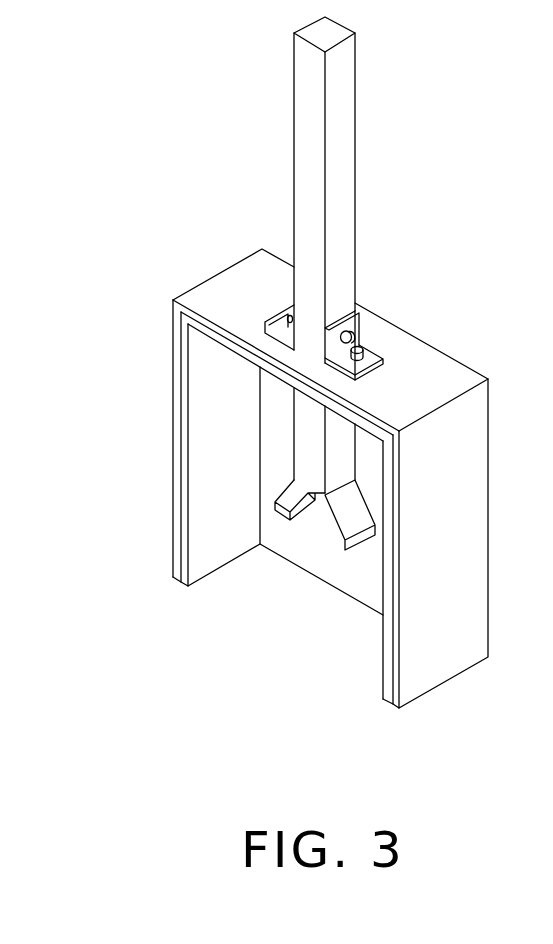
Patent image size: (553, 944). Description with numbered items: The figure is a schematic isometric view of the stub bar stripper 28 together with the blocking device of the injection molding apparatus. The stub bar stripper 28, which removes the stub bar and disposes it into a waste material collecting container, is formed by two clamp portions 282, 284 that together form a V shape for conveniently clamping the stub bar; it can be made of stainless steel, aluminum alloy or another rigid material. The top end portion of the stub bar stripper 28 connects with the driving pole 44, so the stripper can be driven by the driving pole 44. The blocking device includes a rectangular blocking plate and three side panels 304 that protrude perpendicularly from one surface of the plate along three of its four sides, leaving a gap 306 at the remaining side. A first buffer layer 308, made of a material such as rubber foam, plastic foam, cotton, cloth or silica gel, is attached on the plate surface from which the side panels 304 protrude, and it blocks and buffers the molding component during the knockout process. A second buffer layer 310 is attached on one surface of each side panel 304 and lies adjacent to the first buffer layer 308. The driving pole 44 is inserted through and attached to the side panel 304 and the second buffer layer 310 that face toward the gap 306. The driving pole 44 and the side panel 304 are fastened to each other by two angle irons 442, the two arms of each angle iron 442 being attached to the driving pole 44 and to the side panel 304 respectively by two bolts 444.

The driving pole 44 is at (344, 147).
The bolt 444 is at (358, 340).
The angle iron 442 is at (391, 319).
The side panel 304 is at (193, 316).
The gap 306 is at (352, 645).
The first buffer layer 308 is at (272, 447).
The second buffer layer 310 is at (215, 507).
The stub bar stripper 28 is at (266, 588).
The clamp portion 282 is at (338, 537).
The clamp portion 284 is at (283, 508).